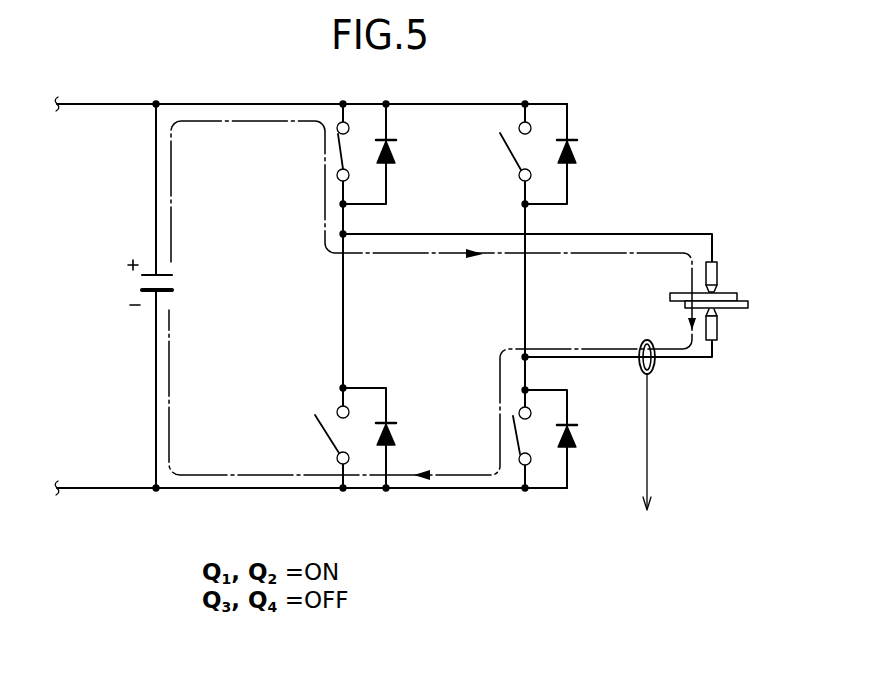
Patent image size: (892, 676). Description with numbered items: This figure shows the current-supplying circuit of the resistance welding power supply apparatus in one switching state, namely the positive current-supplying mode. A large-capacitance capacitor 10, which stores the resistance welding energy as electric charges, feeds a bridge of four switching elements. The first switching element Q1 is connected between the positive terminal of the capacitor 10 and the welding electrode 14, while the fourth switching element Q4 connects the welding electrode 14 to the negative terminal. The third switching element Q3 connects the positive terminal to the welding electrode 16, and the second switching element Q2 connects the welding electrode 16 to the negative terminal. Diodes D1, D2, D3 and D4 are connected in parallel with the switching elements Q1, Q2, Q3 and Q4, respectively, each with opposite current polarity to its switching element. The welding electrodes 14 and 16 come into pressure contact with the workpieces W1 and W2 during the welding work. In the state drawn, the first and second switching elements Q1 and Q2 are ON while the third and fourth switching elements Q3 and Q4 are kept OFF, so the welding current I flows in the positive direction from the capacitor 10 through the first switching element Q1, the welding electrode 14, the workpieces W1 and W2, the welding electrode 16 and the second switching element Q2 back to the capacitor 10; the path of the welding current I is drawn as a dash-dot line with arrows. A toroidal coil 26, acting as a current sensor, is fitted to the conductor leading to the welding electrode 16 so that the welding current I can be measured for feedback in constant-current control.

The capacitor 10 is at (137, 277).
The welding electrode 14 is at (718, 278).
The welding electrode 16 is at (718, 331).
The toroidal coil 26 is at (657, 367).
The workpiece W1 is at (680, 292).
The workpiece W2 is at (727, 309).
The first switching element Q1 is at (331, 148).
The second switching element Q2 is at (512, 437).
The third switching element Q3 is at (505, 158).
The fourth switching element Q4 is at (315, 434).
The diode D1 is at (403, 148).
The diode D2 is at (580, 437).
The diode D3 is at (579, 152).
The diode D4 is at (400, 432).
The welding current I is at (430, 258).